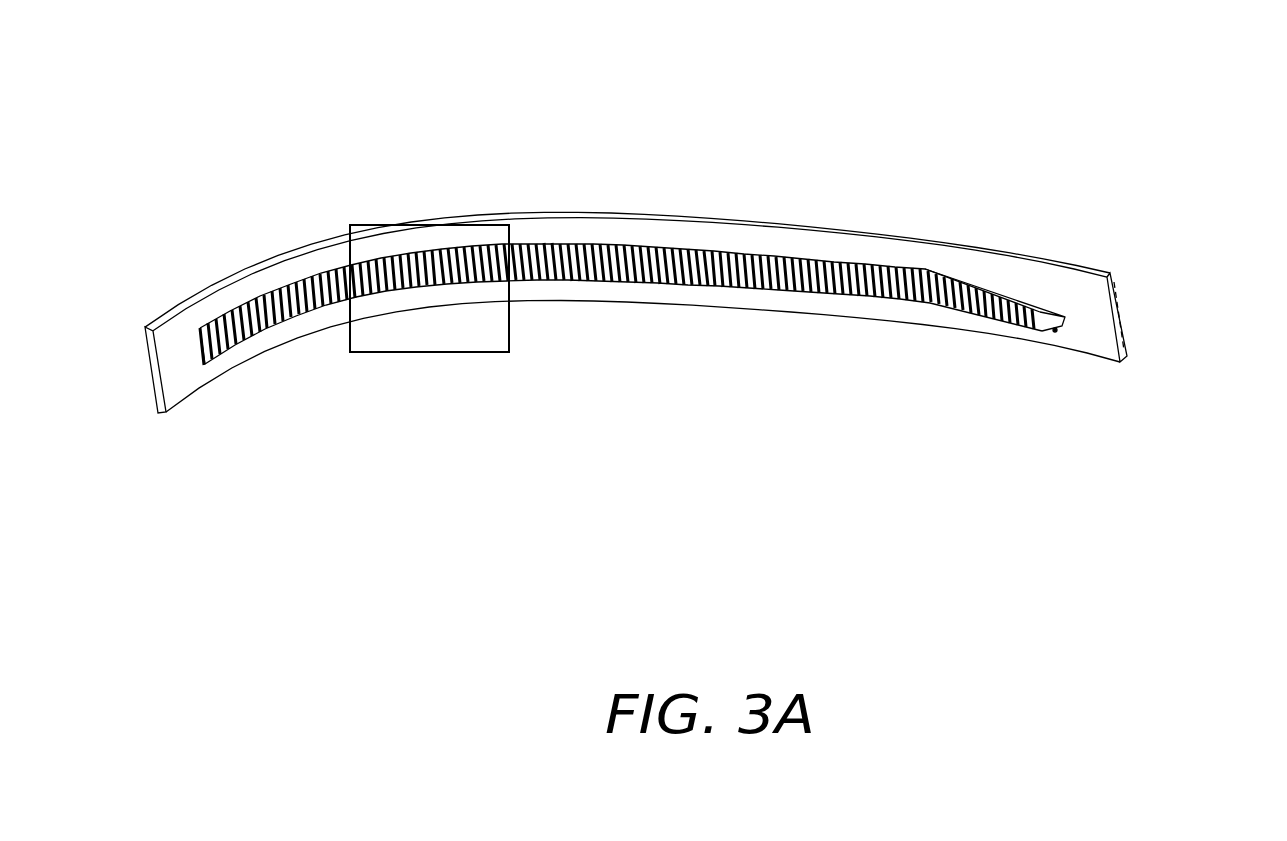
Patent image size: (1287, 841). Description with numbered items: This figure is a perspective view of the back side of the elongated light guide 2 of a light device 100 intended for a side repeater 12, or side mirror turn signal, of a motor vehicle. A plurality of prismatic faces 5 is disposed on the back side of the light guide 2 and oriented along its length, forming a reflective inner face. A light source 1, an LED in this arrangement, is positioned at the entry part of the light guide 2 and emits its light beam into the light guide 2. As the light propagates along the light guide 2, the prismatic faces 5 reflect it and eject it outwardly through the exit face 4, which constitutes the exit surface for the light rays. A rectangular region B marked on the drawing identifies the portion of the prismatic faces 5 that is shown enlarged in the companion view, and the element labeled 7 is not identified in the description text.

The light device 100 is at (803, 92).
The side repeater 12 is at (295, 224).
The prismatic faces 5 is at (303, 312).
The light guide 2 is at (1040, 312).
The strip end top face 7 is at (1053, 295).
The exit face 4 is at (1123, 325).
The light source 1 is at (1053, 332).
The region B is at (509, 328).